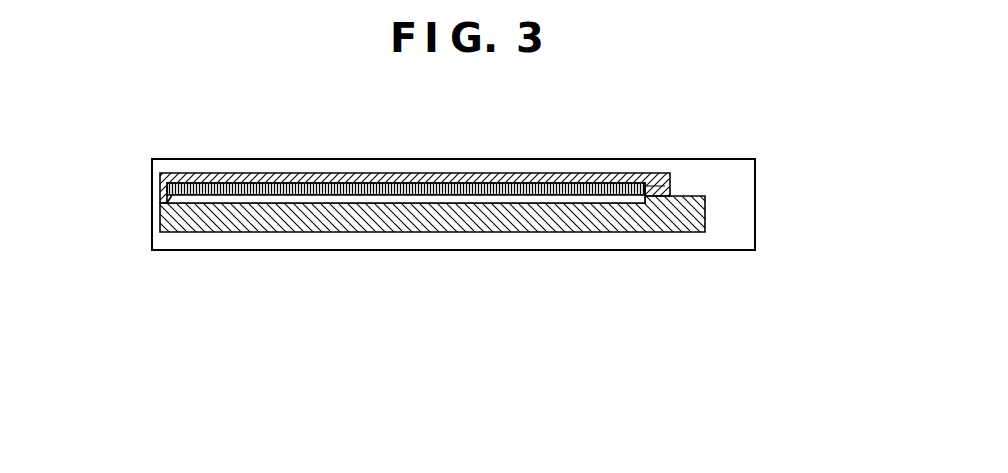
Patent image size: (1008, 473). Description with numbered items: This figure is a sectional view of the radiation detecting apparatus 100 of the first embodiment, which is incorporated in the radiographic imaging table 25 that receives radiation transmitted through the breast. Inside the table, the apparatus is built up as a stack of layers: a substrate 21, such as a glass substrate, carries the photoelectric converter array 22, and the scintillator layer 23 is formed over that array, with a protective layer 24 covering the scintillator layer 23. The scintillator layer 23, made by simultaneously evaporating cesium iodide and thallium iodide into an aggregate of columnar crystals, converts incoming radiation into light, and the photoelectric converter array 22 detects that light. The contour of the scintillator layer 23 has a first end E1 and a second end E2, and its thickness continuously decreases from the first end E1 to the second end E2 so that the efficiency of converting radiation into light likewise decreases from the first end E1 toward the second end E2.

The radiation detecting apparatus 100 is at (503, 261).
The radiographic imaging table 25 is at (755, 197).
The protective layer 24 is at (594, 183).
The scintillator layer 23 is at (310, 186).
The photoelectric converter array 22 is at (395, 200).
The substrate 21 is at (603, 226).
The first end E1 is at (167, 165).
The second end E2 is at (650, 186).